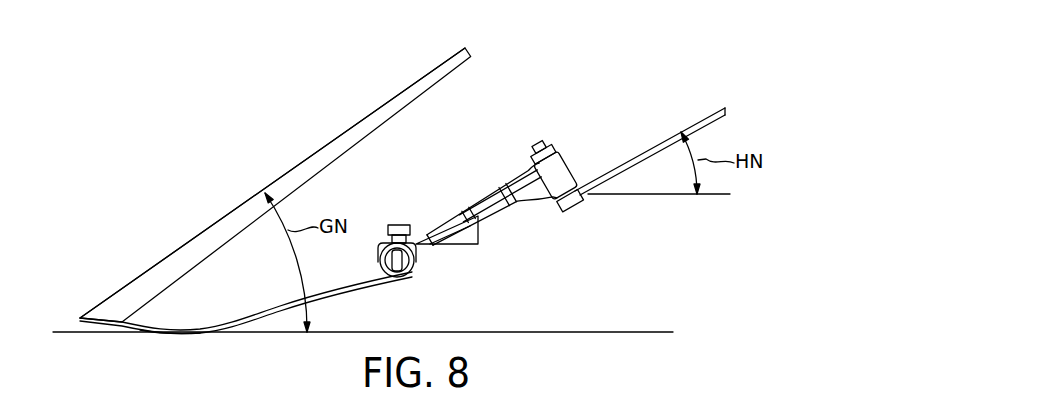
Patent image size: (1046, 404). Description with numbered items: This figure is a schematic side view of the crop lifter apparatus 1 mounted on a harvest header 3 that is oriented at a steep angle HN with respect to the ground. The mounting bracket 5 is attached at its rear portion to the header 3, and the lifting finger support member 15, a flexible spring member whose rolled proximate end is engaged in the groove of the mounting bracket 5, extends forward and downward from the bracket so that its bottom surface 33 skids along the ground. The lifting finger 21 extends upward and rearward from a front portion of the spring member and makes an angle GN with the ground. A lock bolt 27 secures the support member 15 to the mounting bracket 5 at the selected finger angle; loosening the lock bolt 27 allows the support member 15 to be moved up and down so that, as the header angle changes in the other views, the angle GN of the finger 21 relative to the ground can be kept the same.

The crop lifter apparatus 1 is at (203, 153).
The harvest header 3 is at (679, 128).
The mounting bracket 5 is at (473, 192).
The lifting finger support member 15 is at (352, 291).
The lifting finger 21 is at (205, 229).
The lock bolt 27 is at (401, 223).
The bottom surface 33 is at (167, 334).